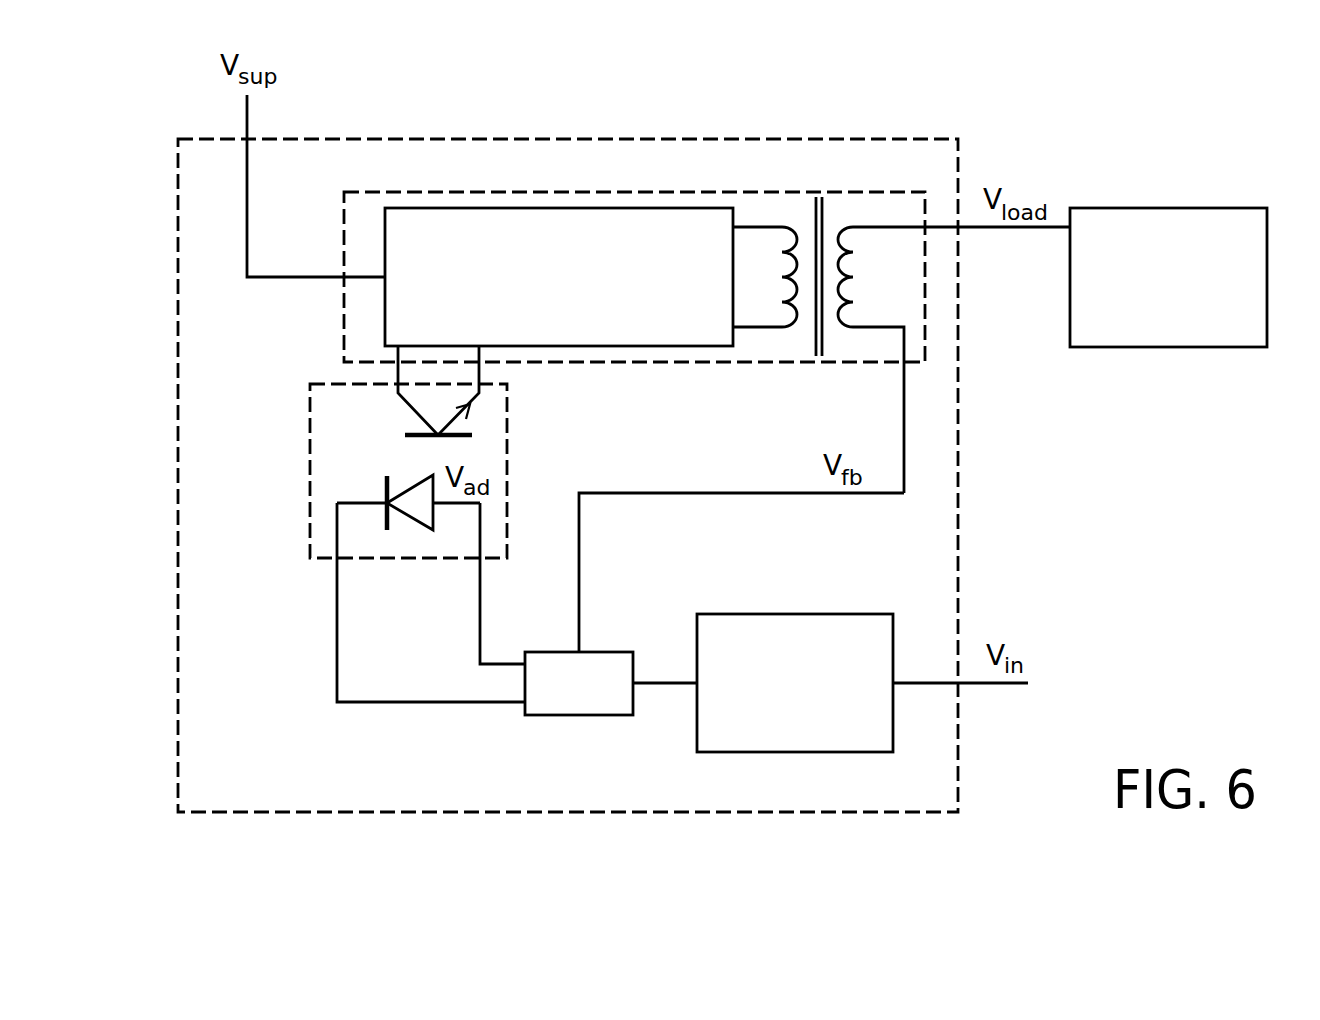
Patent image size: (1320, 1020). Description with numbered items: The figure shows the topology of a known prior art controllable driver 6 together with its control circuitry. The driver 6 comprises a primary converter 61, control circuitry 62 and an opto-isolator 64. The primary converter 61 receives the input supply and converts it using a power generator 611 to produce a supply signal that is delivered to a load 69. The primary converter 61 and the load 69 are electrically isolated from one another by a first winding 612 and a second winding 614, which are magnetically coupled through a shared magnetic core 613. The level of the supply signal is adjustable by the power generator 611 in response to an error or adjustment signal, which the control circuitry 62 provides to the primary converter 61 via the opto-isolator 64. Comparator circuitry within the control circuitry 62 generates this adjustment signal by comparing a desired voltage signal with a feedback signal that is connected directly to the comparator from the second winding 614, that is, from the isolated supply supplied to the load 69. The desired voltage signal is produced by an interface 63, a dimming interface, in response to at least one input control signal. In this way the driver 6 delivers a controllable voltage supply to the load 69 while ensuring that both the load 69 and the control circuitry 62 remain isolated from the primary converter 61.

The driver 6 is at (178, 210).
The primary converter 61 is at (344, 208).
The power generator 611 is at (540, 293).
The first winding 612 is at (780, 227).
The shared magnetic core 613 is at (820, 197).
The second winding 614 is at (858, 227).
The control circuitry 62 is at (564, 696).
The interface 63 is at (779, 696).
The opto-isolator 64 is at (310, 405).
The load 69 is at (1154, 291).